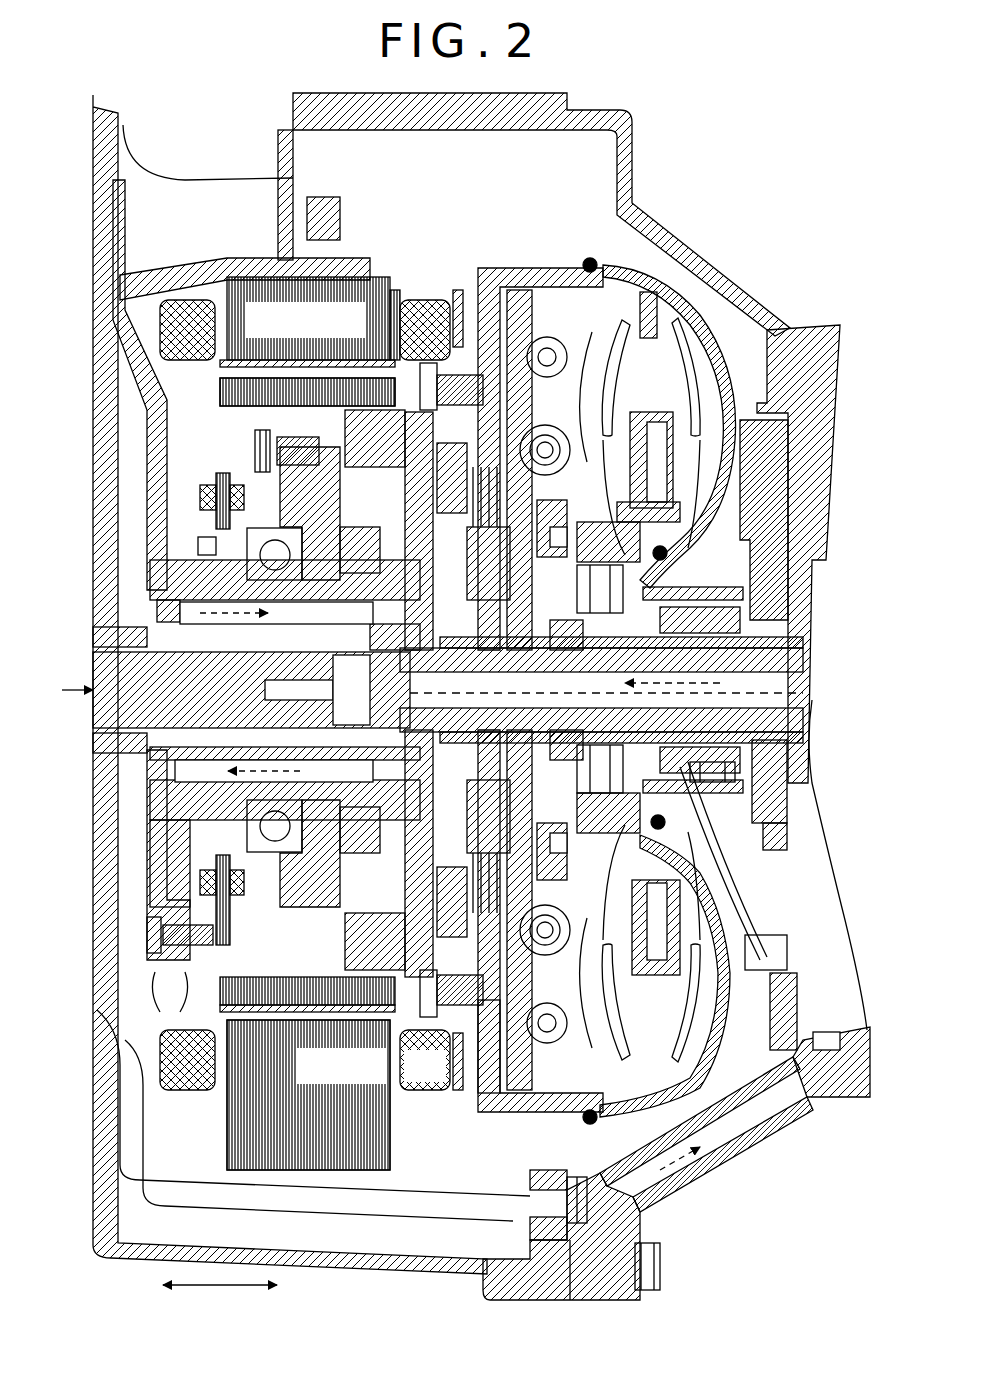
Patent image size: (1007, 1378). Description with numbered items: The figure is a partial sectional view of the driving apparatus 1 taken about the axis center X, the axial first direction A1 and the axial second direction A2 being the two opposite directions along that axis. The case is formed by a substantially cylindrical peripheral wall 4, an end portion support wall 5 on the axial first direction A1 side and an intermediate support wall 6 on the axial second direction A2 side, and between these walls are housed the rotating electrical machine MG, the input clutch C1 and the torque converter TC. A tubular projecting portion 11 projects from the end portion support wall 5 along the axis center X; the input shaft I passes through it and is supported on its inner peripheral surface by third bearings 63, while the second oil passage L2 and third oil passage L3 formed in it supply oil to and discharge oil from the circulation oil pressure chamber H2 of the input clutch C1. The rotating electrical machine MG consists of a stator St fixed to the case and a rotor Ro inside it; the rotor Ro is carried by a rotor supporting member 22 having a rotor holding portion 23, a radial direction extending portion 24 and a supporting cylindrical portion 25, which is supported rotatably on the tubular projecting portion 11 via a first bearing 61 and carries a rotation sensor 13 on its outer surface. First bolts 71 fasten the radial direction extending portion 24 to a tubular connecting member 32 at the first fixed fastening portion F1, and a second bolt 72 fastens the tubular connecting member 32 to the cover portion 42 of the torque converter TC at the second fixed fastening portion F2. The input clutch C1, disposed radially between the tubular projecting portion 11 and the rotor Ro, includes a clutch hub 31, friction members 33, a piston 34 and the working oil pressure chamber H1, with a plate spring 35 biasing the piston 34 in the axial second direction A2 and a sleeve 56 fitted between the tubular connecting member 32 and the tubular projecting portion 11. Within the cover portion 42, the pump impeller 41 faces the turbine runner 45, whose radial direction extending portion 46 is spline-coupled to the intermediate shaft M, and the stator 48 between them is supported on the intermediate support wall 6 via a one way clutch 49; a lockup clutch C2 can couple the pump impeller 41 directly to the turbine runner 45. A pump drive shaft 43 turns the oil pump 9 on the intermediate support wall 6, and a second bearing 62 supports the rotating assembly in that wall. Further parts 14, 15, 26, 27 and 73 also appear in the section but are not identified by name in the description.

The driving apparatus 1 is at (240, 152).
The peripheral wall 4 is at (487, 118).
The end portion support wall 5 is at (125, 290).
The intermediate support wall 6 is at (812, 345).
The oil pump 9 is at (798, 562).
The tubular projecting portion 11 is at (200, 580).
The rotation sensor 13 is at (190, 480).
The sensor stator 14 is at (215, 515).
The bolt 15 is at (228, 497).
The rotor supporting member 22 is at (188, 1092).
The rotor holding portion 23 is at (212, 1003).
The radial direction extending portion 24 is at (242, 903).
The supporting cylindrical portion 25 is at (152, 532).
The rotor support 26 is at (258, 860).
The rotor support member 27 is at (205, 848).
The clutch hub 31 is at (369, 530).
The tubular connecting member 32 is at (300, 365).
The friction member 33 is at (360, 370).
The piston 34 is at (386, 853).
The plate spring 35 is at (315, 900).
The pump impeller 41 is at (680, 312).
The cover portion 42 is at (537, 266).
The pump drive shaft 43 is at (790, 624).
The turbine runner 45 is at (583, 322).
The radial direction extending portion 46 is at (600, 885).
The stator 48 is at (648, 633).
The one way clutch 49 is at (641, 677).
The sleeve 56 is at (292, 829).
The first bearing 61 is at (272, 540).
The second bearing 62 is at (714, 784).
The third bearing 63 is at (333, 662).
The first bolts 71 is at (255, 450).
The second bolt 72 is at (425, 335).
The bolt 73 is at (146, 935).
The rotating electrical machine MG is at (387, 258).
The torque converter TC is at (648, 258).
The stator St is at (400, 300).
The rotor Ro is at (228, 394).
The first fixed fastening portion F1 is at (243, 425).
The second fixed fastening portion F2 is at (470, 312).
The input shaft I is at (95, 672).
The axis center X is at (65, 693).
The second oil passage L2 is at (160, 600).
The third oil passage L3 is at (225, 763).
The intermediate shaft M is at (770, 738).
The working oil pressure chamber H1 is at (322, 1000).
The circulation oil pressure chamber H2 is at (432, 1005).
The input clutch C1 is at (370, 975).
The lockup clutch C2 is at (460, 1005).
The axial first direction A1 is at (197, 1286).
The axial second direction A2 is at (313, 1286).